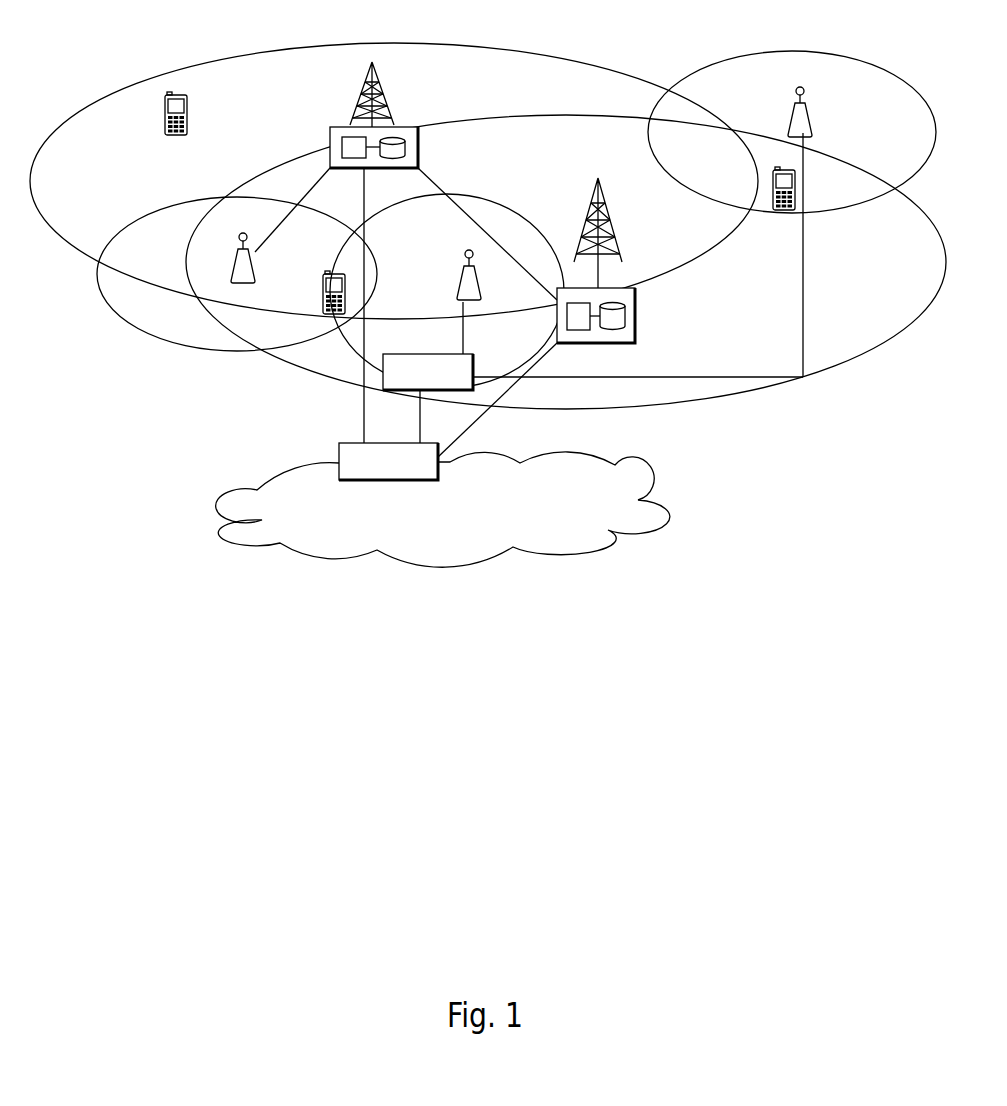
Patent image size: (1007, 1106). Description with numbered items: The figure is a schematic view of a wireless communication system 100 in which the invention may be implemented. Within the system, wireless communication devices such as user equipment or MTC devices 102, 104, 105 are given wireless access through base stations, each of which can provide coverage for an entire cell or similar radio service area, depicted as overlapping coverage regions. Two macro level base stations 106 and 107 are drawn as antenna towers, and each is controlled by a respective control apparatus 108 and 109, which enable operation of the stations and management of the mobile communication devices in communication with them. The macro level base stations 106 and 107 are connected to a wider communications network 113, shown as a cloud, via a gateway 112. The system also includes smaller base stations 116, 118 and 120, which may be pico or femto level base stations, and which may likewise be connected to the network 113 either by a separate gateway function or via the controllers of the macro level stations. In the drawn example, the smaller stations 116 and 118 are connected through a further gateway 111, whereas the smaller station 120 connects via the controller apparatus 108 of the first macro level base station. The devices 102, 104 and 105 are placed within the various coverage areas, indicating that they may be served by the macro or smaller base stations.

The wireless communication system 100 is at (113, 86).
The wireless communication device 102 is at (163, 127).
The wireless communication device 104 is at (323, 297).
The wireless communication device 105 is at (782, 213).
The macro level base station 106 is at (357, 103).
The macro level base station 107 is at (613, 233).
The control apparatus 108 is at (330, 137).
The control apparatus 109 is at (636, 340).
The gateway 111 is at (383, 377).
The gateway 112 is at (340, 443).
The wider communications network 113 is at (280, 490).
The smaller base station 116 is at (792, 113).
The smaller base station 118 is at (468, 288).
The smaller base station 120 is at (235, 262).